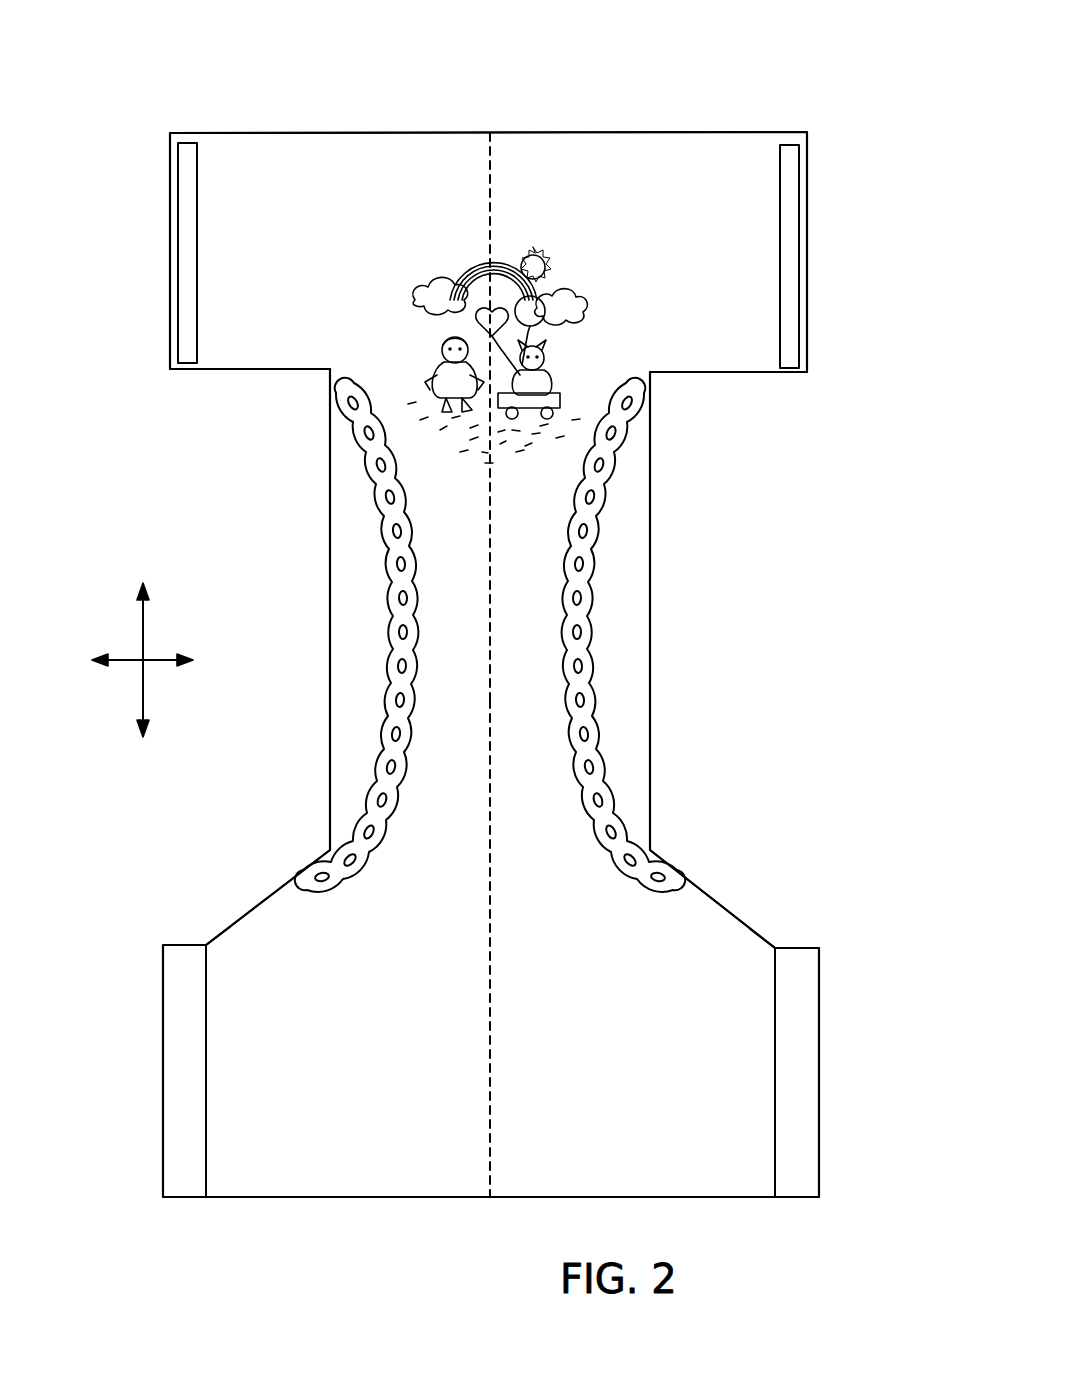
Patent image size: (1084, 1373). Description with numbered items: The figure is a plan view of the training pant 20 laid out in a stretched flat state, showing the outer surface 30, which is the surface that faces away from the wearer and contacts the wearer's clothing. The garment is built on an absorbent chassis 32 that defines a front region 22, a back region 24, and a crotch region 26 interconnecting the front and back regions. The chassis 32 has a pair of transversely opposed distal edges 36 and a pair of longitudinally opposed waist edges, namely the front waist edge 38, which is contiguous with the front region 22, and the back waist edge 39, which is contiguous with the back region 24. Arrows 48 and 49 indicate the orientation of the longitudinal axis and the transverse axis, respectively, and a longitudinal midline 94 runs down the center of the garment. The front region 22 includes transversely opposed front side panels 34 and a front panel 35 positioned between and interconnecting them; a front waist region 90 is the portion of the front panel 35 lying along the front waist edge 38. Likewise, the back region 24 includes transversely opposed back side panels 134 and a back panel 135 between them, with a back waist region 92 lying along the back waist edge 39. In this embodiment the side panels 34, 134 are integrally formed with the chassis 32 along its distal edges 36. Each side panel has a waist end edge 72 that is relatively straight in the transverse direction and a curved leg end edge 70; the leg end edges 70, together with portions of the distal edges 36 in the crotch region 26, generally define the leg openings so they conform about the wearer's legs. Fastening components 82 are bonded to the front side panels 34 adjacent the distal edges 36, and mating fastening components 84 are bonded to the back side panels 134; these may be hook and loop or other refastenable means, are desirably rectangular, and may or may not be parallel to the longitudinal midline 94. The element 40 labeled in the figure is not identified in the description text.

The training pant 20 is at (600, 98).
The front region 22 is at (835, 338).
The back region 24 is at (345, 1000).
The crotch region 26 is at (538, 575).
The outer surface 30 is at (637, 698).
The absorbent chassis 32 is at (575, 836).
The front side panels 34 is at (281, 231).
The front panel 35 is at (593, 322).
The distal edges 36 is at (170, 293).
The front waist edge 38 is at (440, 133).
The back waist edge 39 is at (382, 1197).
The leg cuff 40 is at (377, 398).
The longitudinal axis arrow 48 is at (143, 628).
The transverse axis arrow 49 is at (125, 665).
The leg end edges 70 is at (248, 371).
The waist end edge 72 is at (286, 133).
The fastening component 82 is at (197, 166).
The mating fastening components 84 is at (193, 1035).
The front waist region 90 is at (526, 135).
The back waist region 92 is at (462, 1200).
The longitudinal midline 94 is at (490, 818).
The back side panels 134 is at (220, 953).
The back panel 135 is at (590, 997).